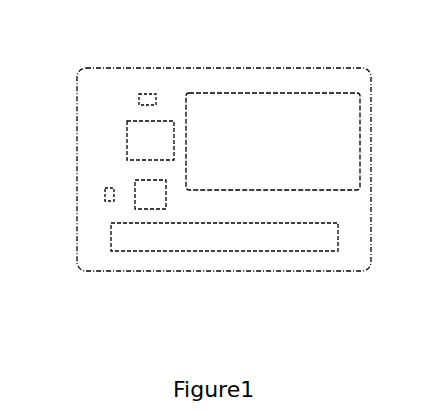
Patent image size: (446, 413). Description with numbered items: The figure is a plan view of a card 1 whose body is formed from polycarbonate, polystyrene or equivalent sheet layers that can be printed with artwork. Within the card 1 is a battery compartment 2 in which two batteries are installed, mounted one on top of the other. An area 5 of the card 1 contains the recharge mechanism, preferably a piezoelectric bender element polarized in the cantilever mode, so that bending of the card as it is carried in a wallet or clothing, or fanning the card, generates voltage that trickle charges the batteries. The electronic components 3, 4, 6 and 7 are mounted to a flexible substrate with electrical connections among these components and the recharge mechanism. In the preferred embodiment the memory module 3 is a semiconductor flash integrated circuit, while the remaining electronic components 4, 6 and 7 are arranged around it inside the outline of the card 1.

The card 1 is at (165, 291).
The battery compartment 2 is at (286, 108).
The memory module 3 is at (142, 138).
The electronic component 4 is at (146, 197).
The area 5 is at (280, 239).
The electronic component 6 is at (146, 94).
The electronic component 7 is at (108, 193).